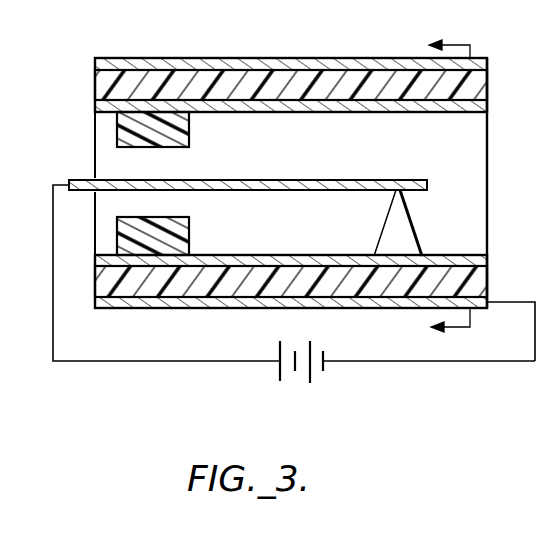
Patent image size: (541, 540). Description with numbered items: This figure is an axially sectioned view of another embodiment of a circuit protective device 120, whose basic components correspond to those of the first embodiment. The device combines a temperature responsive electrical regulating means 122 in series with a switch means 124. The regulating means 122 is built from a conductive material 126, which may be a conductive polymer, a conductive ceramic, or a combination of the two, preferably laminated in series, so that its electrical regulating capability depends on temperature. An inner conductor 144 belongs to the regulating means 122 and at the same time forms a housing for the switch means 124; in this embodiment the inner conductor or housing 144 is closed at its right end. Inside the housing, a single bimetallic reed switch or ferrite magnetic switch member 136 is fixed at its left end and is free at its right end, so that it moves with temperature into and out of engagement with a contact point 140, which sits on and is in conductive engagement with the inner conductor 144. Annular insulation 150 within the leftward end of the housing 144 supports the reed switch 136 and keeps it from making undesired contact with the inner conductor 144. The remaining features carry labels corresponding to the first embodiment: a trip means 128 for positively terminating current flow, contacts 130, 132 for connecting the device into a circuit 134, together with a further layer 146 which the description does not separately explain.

The circuit protective device 120 is at (353, 52).
The temperature responsive electrical regulating means 122 is at (540, 90).
The switch means 124 is at (540, 150).
The conductive material 126 is at (317, 275).
The central electrode assembly 128 is at (270, 174).
The electrical lead 130 is at (53, 184).
The electrical lead 132 is at (522, 308).
The bias voltage source 134 is at (427, 362).
The reed switch member 136 is at (263, 192).
The contact point 140 is at (412, 208).
The inner conductor 144 is at (442, 112).
The conductive backplate layer 146 is at (260, 58).
The annular insulation 150 is at (190, 134).